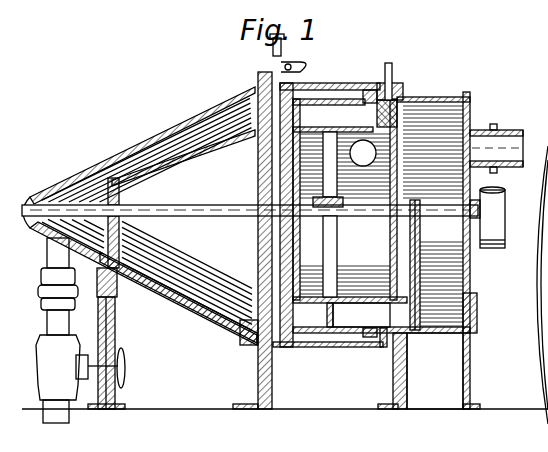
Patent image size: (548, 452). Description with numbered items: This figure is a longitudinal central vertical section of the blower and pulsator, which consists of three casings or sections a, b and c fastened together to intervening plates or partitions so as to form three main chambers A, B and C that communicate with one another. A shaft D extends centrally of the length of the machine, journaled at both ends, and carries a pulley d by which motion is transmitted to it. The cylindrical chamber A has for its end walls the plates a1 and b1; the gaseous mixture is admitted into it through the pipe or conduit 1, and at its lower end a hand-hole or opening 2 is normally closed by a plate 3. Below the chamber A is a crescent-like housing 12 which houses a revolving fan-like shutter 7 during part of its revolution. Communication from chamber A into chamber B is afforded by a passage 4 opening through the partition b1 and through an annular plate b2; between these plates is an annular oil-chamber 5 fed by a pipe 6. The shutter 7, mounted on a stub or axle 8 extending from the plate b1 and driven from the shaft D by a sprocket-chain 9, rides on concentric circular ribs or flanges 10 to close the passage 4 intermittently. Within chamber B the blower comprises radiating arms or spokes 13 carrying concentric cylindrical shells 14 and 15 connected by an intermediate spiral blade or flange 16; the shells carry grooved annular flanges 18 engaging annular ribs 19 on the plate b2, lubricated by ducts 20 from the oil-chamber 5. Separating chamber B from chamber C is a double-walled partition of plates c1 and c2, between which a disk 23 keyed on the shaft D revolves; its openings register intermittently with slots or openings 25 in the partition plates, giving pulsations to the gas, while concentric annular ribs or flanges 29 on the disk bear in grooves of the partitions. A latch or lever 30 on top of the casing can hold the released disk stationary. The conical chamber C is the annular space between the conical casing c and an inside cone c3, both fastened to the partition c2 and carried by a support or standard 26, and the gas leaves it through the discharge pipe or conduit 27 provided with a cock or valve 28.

The pipe or conduit 1 is at (512, 152).
The hand-hole or opening 2 is at (470, 345).
The plate 3 is at (478, 315).
The passage 4 is at (361, 315).
The annular oil-chamber 5 is at (428, 97).
The pipe 6 is at (390, 62).
The revolving fan-like shutter 7 is at (408, 362).
The stub or axle 8 is at (418, 325).
The sprocket-chain 9 is at (420, 245).
The concentric circular ribs or flanges 10 is at (472, 215).
The semi-circular or crescent-like housing 12 is at (408, 382).
The radiating arms or spokes 13 is at (333, 249).
The inner cylindrical shell 14 is at (338, 272).
The outer cylindrical shell 15 is at (358, 347).
The spiral blade or flange 16 is at (320, 85).
The annular flanges 18 is at (455, 157).
The annular ribs 19 is at (378, 349).
The ducts 20 is at (418, 144).
The disk 23 is at (262, 362).
The slots or openings 25 is at (258, 312).
The support or standard 26 is at (115, 327).
The discharge pipe or conduit 27 is at (50, 418).
The cock or valve 28 is at (80, 319).
The concentric annular ribs or flanges 29 is at (265, 340).
The latch or lever 30 is at (287, 70).
The casing or section a is at (432, 97).
The plate a1 is at (470, 277).
The casing or section b is at (357, 85).
The plate or partition b1 is at (395, 190).
The annular plate or partition b2 is at (398, 92).
The conical casing c is at (135, 140).
The partition plate c1 is at (300, 276).
The partition plate c2 is at (258, 258).
The inside cone c3 is at (178, 163).
The pulley d is at (490, 250).
The chamber A is at (446, 188).
The chamber B is at (330, 357).
The chamber C is at (195, 298).
The shaft D is at (200, 206).